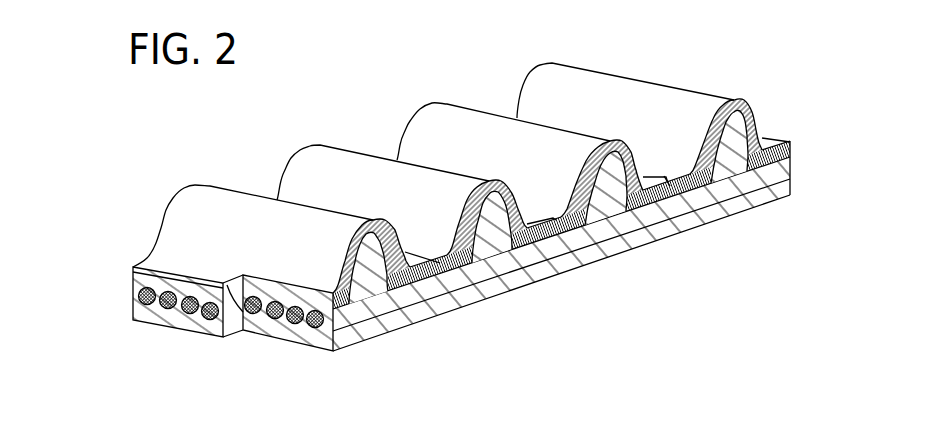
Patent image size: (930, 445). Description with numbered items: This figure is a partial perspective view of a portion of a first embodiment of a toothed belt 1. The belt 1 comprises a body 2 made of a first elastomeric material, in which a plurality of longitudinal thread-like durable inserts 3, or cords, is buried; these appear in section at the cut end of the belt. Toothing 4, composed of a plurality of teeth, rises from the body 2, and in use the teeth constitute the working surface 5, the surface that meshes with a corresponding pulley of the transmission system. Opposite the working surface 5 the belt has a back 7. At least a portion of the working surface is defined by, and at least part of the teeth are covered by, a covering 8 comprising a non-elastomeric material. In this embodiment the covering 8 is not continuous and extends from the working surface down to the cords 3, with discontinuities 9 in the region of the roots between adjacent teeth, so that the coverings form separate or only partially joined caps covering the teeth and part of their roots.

The toothed belt 1 is at (796, 90).
The body 2 is at (443, 307).
The longitudinal thread-like durable inserts 3 is at (210, 320).
The toothing 4 is at (392, 298).
The working surface 5 is at (550, 191).
The back 7 is at (731, 218).
The covering 8 is at (307, 147).
The discontinuities 9 is at (670, 185).